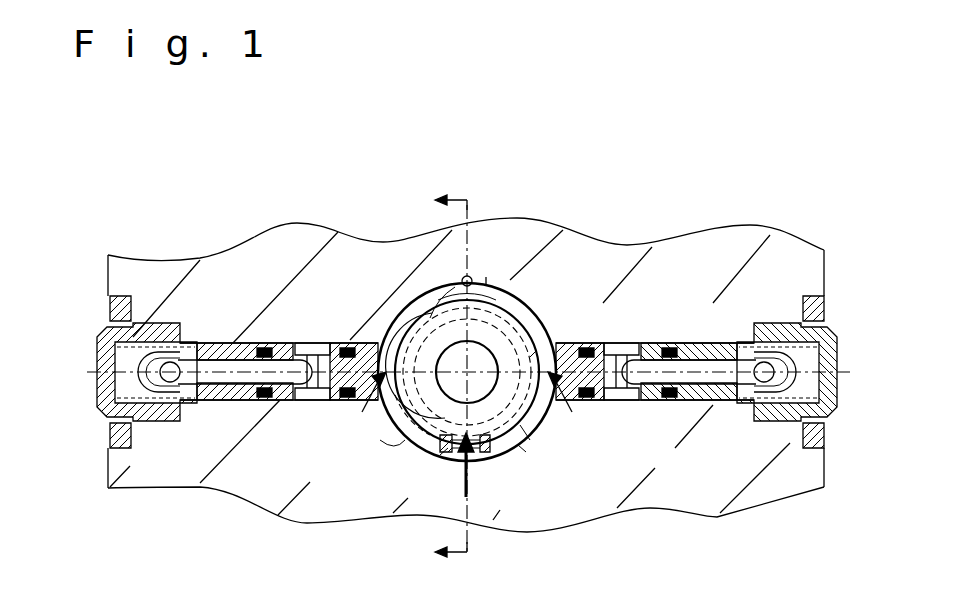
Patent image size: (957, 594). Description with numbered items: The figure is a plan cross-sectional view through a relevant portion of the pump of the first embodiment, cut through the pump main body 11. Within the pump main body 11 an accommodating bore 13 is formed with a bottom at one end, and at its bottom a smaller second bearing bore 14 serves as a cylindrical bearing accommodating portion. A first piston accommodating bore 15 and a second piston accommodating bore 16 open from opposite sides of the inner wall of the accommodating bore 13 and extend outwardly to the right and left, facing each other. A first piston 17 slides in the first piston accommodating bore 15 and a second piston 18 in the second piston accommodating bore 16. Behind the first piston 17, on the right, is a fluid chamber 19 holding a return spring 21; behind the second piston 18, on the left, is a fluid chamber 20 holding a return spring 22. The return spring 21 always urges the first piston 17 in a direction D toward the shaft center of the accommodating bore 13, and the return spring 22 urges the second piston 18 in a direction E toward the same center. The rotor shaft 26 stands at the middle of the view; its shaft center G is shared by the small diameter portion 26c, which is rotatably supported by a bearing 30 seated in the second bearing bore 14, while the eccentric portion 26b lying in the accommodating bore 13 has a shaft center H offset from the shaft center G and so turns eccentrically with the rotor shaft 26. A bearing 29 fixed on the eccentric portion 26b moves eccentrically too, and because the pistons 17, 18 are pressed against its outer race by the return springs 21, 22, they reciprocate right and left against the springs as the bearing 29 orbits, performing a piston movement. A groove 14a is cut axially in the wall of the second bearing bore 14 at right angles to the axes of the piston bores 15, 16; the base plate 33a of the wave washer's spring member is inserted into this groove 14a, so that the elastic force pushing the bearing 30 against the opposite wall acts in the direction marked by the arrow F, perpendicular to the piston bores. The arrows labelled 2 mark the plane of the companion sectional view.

The pump main body 11 is at (813, 472).
The accommodating bore 13 is at (450, 277).
The second bearing bore 14 is at (372, 428).
The groove 14a is at (489, 456).
The first piston accommodating bore 15 is at (660, 405).
The second piston accommodating bore 16 is at (282, 401).
The first piston 17 is at (682, 345).
The second piston 18 is at (233, 343).
The fluid chamber 19 is at (825, 352).
The fluid chamber 20 is at (112, 354).
The return spring 21 is at (783, 408).
The return spring 22 is at (145, 413).
The rotor shaft 26 is at (488, 334).
The eccentric portion 26b is at (393, 300).
The small diameter portion 26c is at (486, 277).
The bearing 29 is at (393, 448).
The bearing 30 is at (523, 430).
The base plate 33a is at (525, 446).
The section line 2- 2 is at (441, 376).
The direction D is at (572, 410).
The direction E is at (362, 410).
The force F is at (463, 485).
The shaft center G is at (440, 456).
The shaft center H is at (532, 352).